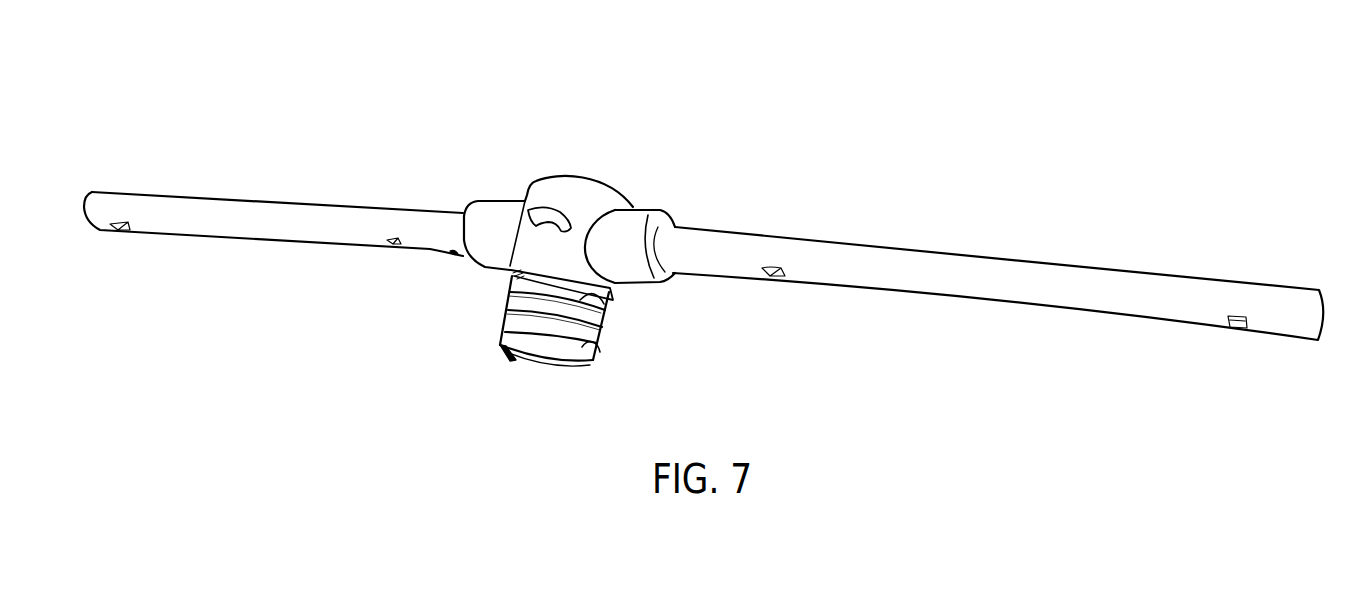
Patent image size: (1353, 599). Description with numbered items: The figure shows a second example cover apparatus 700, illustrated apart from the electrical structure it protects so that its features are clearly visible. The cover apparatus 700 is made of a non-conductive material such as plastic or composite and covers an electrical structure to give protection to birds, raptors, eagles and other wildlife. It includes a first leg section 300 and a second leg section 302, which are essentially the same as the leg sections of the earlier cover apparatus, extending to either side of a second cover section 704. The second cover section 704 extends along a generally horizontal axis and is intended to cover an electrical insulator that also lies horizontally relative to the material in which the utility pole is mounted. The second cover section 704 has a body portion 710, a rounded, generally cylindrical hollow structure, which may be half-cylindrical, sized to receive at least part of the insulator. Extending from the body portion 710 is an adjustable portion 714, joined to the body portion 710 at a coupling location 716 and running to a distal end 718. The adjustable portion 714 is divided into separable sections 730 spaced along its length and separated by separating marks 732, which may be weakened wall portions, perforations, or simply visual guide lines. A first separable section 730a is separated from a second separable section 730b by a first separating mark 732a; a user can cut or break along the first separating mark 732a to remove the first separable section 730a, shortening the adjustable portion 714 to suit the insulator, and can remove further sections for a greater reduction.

The second cover apparatus 700 is at (224, 86).
The first leg section 300 is at (291, 204).
The second leg section 302 is at (968, 252).
The second cover section 704 is at (604, 182).
The body portion 710 is at (549, 185).
The adjustable portion 714 is at (597, 324).
The coupling location 716 is at (511, 279).
The distal end 718 is at (571, 365).
The separable sections 730 is at (507, 299).
The first separable section 730a is at (503, 353).
The second separable section 730b is at (505, 328).
The separating marks 732 is at (603, 300).
The first separating mark 732a is at (594, 350).